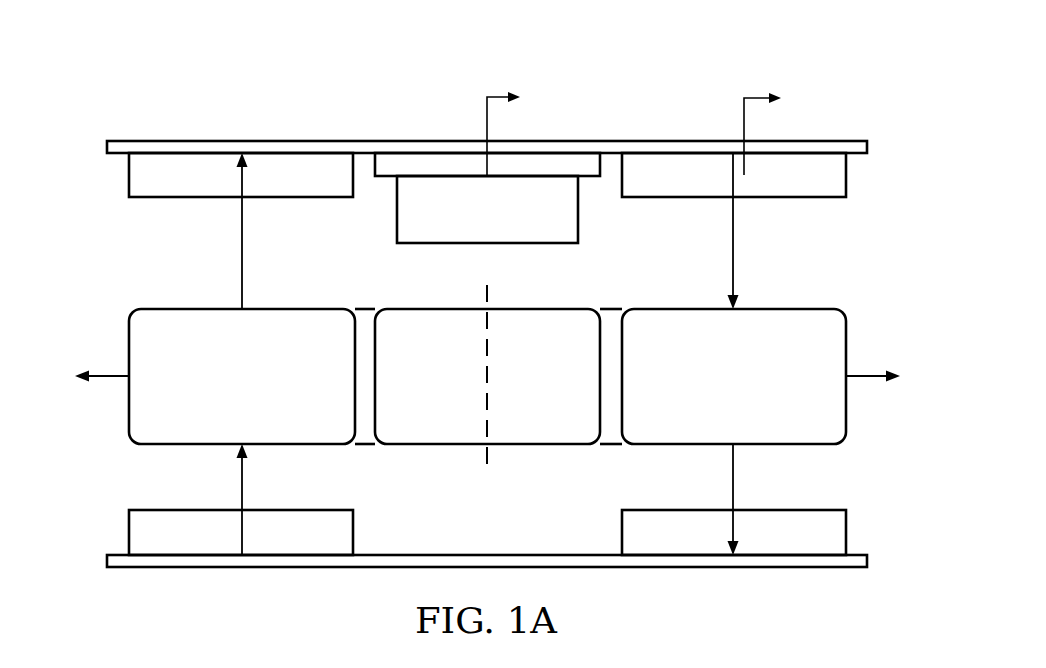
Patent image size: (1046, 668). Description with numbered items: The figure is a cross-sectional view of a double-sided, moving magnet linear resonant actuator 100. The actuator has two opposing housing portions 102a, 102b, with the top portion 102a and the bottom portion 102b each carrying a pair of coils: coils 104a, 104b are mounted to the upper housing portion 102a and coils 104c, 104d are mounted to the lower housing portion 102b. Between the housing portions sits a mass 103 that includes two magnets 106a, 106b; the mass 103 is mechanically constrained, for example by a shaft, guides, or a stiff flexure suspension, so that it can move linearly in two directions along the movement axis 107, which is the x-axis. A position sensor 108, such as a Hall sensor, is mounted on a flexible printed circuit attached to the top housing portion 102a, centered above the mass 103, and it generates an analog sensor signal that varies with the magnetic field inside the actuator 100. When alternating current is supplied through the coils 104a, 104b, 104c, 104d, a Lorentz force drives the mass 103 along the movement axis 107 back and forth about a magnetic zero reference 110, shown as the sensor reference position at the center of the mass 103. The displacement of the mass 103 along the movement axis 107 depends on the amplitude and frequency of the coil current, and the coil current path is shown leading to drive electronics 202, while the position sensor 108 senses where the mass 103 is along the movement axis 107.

The double-sided, moving magnet LRA 100 is at (501, 317).
The housing portion 102a is at (420, 141).
The housing portion 102b is at (377, 568).
The mass 103 is at (454, 348).
The coil 104a is at (129, 174).
The coil 104b is at (846, 174).
The coil 104c is at (129, 532).
The coil 104d is at (846, 532).
The magnet 106a is at (269, 409).
The magnet 106b is at (762, 409).
The movement axis 107 is at (105, 378).
The position sensor 108 is at (470, 243).
The magnetic zero reference 110 is at (488, 375).
The drive electronics 202 is at (852, 123).